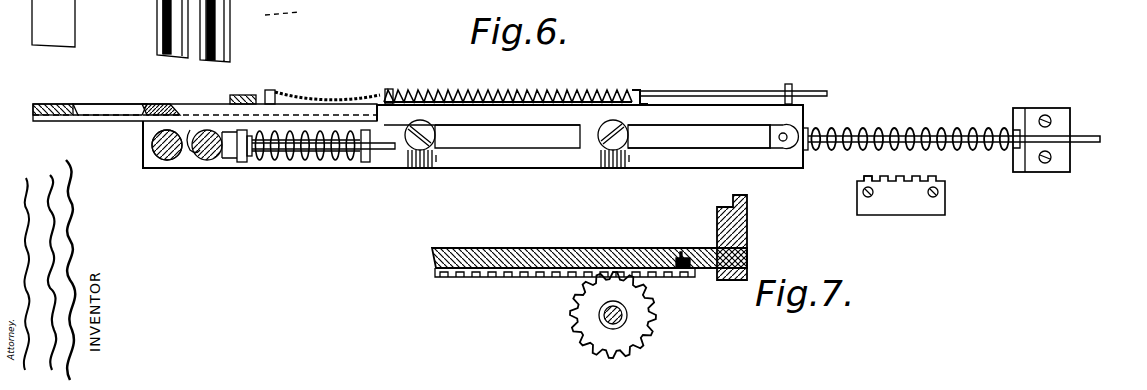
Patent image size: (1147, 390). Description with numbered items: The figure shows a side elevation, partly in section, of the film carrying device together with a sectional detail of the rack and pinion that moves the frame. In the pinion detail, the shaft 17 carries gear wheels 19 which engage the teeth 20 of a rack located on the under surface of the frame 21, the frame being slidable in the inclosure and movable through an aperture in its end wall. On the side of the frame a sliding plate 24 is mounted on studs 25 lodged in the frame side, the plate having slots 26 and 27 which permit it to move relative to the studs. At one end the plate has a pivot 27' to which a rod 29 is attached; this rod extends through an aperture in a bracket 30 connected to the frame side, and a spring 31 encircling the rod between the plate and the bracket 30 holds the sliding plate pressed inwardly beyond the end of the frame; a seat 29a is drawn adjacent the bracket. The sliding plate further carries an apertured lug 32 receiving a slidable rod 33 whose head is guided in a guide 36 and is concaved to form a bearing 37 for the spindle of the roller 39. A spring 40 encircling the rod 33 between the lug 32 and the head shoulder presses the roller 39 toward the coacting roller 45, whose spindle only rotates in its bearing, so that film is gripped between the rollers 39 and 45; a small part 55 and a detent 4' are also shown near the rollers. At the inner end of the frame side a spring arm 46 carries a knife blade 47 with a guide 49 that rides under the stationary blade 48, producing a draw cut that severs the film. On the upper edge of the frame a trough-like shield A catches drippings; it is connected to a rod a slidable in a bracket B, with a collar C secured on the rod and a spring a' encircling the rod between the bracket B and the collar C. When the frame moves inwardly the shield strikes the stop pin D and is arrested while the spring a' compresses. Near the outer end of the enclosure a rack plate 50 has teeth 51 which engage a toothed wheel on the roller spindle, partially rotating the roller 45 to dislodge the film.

In FIG. 6, the spring arm 46 is at (103, 116).
In FIG. 6, the knife blade 47 is at (53, 103).
In FIG. 6, the guide 49 is at (152, 112).
In FIG. 6, the detent arm 4' is at (188, 114).
In FIG. 6, the stationary blade 48 is at (223, 96).
In FIG. 6, the stop pin D is at (273, 90).
In FIG. 6, the shield A is at (347, 97).
In FIG. 6, the roller 45 is at (152, 146).
In FIG. 6, the roller 39 is at (197, 153).
In FIG. 6, the bearing 37 is at (224, 156).
In FIG. 6, the guide 36 is at (239, 162).
In FIG. 6, the washer 55 is at (250, 156).
In FIG. 6, the rod 33 is at (311, 153).
In FIG. 6, the spring 40 is at (286, 137).
In FIG. 6, the lug 32 is at (366, 162).
In FIG. 6, the collar C is at (389, 89).
In FIG. 6, the sliding plate 24 is at (463, 116).
In FIG. 6, the slot 26 is at (499, 128).
In FIG. 6, the spring a' is at (552, 81).
In FIG. 6, the stud 25 is at (421, 129).
In FIG. 6, the bracket B is at (636, 90).
In FIG. 6, the rod a is at (733, 83).
In FIG. 6, the slot 27 is at (713, 110).
In FIG. 6, the pivot 27' is at (800, 99).
In FIG. 6, the rod 29 is at (853, 128).
In FIG. 6, the spring 31 is at (899, 132).
In FIG. 6, the bracket 30 is at (1032, 166).
In FIG. 6, the spring seat 29a is at (1020, 130).
In FIG. 6, the rack plate 50 is at (901, 195).
In FIG. 6, the teeth 51 is at (894, 178).
In FIG. 7, the teeth 20 is at (517, 280).
In FIG. 7, the frame 21 is at (746, 240).
In FIG. 7, the shaft 17 is at (610, 330).
In FIG. 7, the gear wheel 19 is at (632, 318).